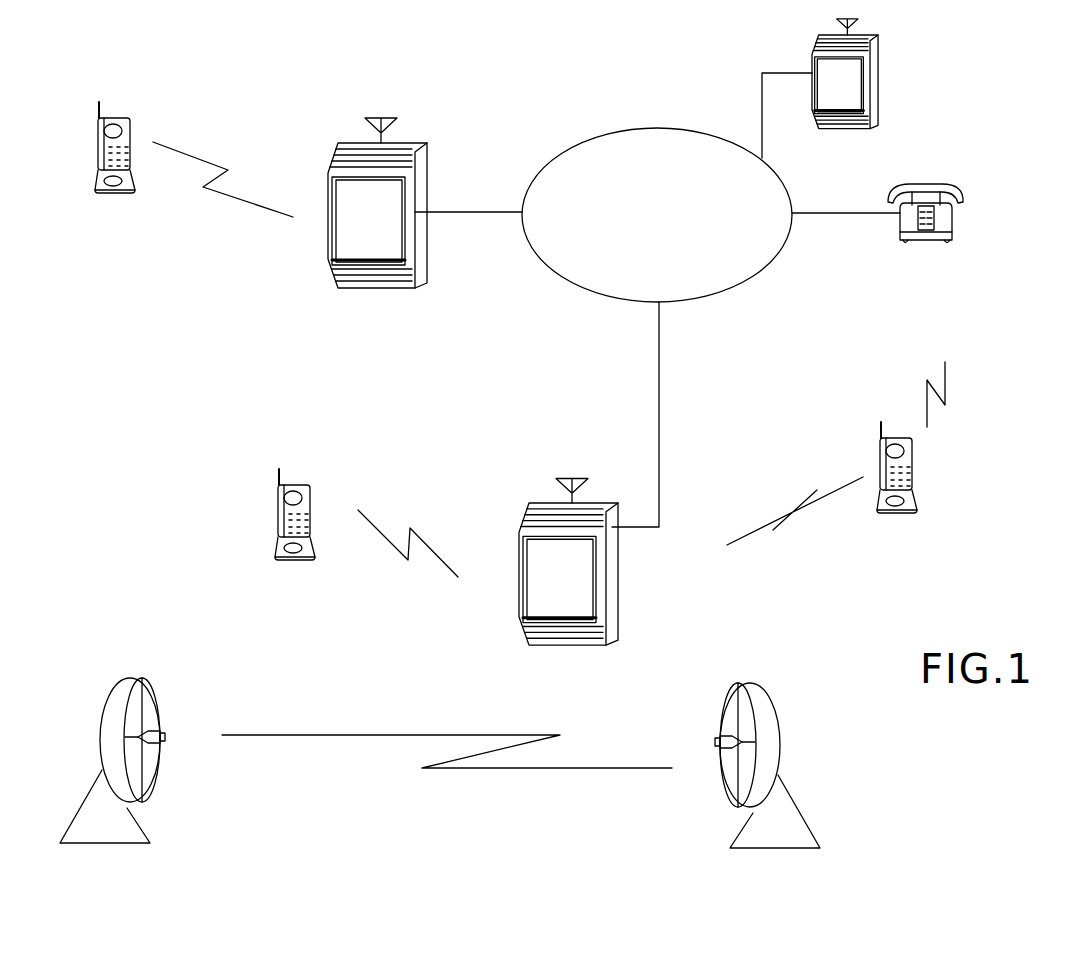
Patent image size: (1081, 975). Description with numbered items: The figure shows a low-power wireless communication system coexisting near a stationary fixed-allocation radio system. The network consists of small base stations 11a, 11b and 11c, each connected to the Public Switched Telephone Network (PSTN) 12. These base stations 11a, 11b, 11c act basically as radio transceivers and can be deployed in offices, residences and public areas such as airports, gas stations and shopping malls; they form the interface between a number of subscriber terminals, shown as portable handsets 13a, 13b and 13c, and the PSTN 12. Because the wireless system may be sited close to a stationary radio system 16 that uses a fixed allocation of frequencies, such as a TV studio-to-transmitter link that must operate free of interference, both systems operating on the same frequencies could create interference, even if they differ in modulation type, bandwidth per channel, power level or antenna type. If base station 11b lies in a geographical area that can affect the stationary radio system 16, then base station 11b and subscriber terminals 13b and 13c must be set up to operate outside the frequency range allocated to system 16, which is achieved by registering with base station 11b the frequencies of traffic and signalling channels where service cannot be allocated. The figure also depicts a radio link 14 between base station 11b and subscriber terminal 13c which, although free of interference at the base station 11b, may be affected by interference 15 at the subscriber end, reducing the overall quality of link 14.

The base station 11a is at (420, 162).
The base station 11b is at (612, 603).
The base station 11c is at (880, 51).
The Public Switched Telephone Network (PSTN) 12 is at (639, 128).
The portable handset 13a is at (131, 124).
The portable handset 13b is at (312, 496).
The portable handset 13c is at (913, 484).
The radio link 14 is at (819, 505).
The interference 15 is at (945, 372).
The stationary radio system 16 is at (143, 690).